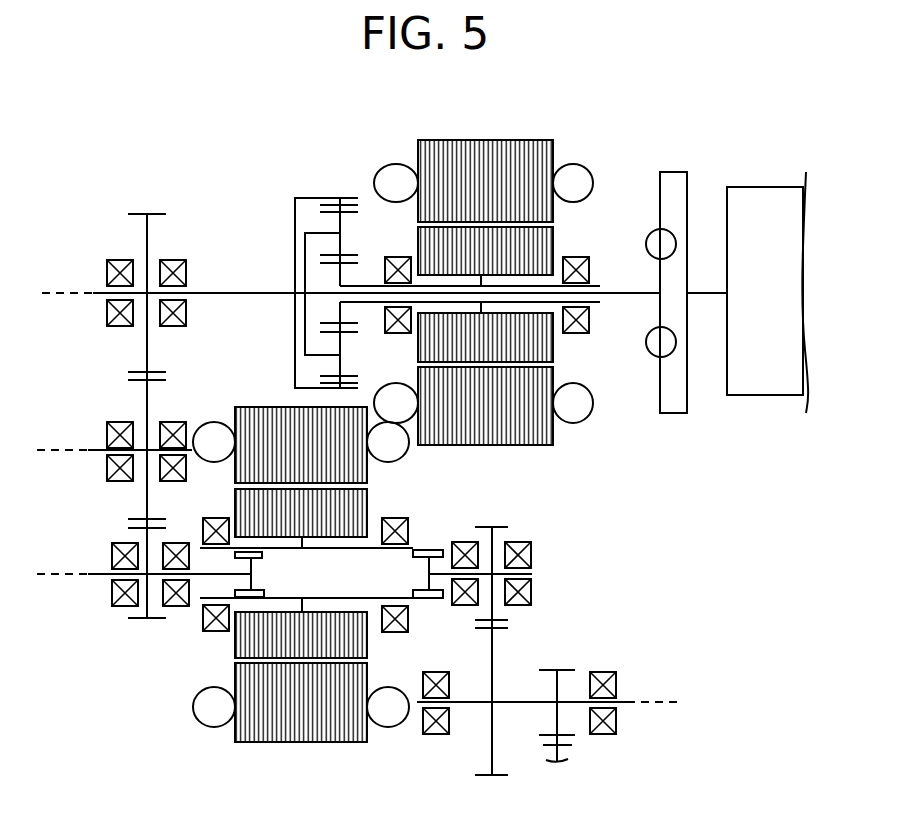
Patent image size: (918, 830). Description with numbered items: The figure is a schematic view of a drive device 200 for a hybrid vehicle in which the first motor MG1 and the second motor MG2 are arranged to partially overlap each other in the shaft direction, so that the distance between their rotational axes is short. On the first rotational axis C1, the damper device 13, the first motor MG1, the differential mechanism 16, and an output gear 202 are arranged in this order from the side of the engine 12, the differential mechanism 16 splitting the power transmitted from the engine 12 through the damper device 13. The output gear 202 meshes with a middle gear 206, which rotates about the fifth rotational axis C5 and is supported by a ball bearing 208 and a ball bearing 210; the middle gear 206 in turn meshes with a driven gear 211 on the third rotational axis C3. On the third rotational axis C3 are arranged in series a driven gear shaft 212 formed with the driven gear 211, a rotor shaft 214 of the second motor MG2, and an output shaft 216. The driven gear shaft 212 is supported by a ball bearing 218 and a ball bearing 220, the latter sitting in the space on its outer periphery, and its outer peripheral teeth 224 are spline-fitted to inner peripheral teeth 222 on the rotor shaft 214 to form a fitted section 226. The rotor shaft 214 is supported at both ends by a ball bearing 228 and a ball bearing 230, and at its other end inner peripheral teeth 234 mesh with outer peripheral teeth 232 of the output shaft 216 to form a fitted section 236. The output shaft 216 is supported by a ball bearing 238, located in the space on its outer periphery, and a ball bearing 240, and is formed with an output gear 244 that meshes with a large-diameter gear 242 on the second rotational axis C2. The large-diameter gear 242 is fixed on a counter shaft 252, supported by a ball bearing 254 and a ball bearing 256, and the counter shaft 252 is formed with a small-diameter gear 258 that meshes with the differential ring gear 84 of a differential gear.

The drive device 200 is at (617, 97).
The engine 12 is at (750, 196).
The damper device 13 is at (690, 190).
The differential mechanism 16 is at (288, 232).
The output gear 202 is at (134, 212).
The middle gear 206 is at (152, 400).
The ball bearing 208 is at (118, 422).
The ball bearing 210 is at (172, 423).
The driven gear 211 is at (136, 620).
The driven gear shaft 212 is at (193, 580).
The rotor shaft 214 is at (337, 551).
The output shaft 216 is at (429, 570).
The ball bearing 218 is at (125, 546).
The ball bearing 220 is at (175, 542).
The inner peripheral teeth 222 is at (293, 574).
The outer peripheral teeth 224 is at (293, 574).
The fitted section 226 is at (266, 562).
The ball bearing 228 is at (215, 632).
The ball bearing 230 is at (393, 518).
The outer peripheral teeth 232 is at (452, 578).
The inner peripheral teeth 234 is at (452, 578).
The fitted section 236 is at (428, 610).
The ball bearing 238 is at (462, 599).
The ball bearing 240 is at (517, 603).
The large-diameter gear 242 is at (488, 775).
The output gear 244 is at (500, 525).
The counter shaft 252 is at (480, 707).
The ball bearing 254 is at (427, 717).
The ball bearing 256 is at (600, 730).
The small-diameter gear 258 is at (567, 667).
The differential ring gear 84 is at (555, 760).
The first motor MG1 is at (488, 137).
The second motor MG2 is at (288, 752).
The first rotational axis C1 is at (78, 295).
The second rotational axis C2 is at (655, 704).
The third rotational axis C3 is at (78, 577).
The fifth rotational axis C5 is at (78, 452).